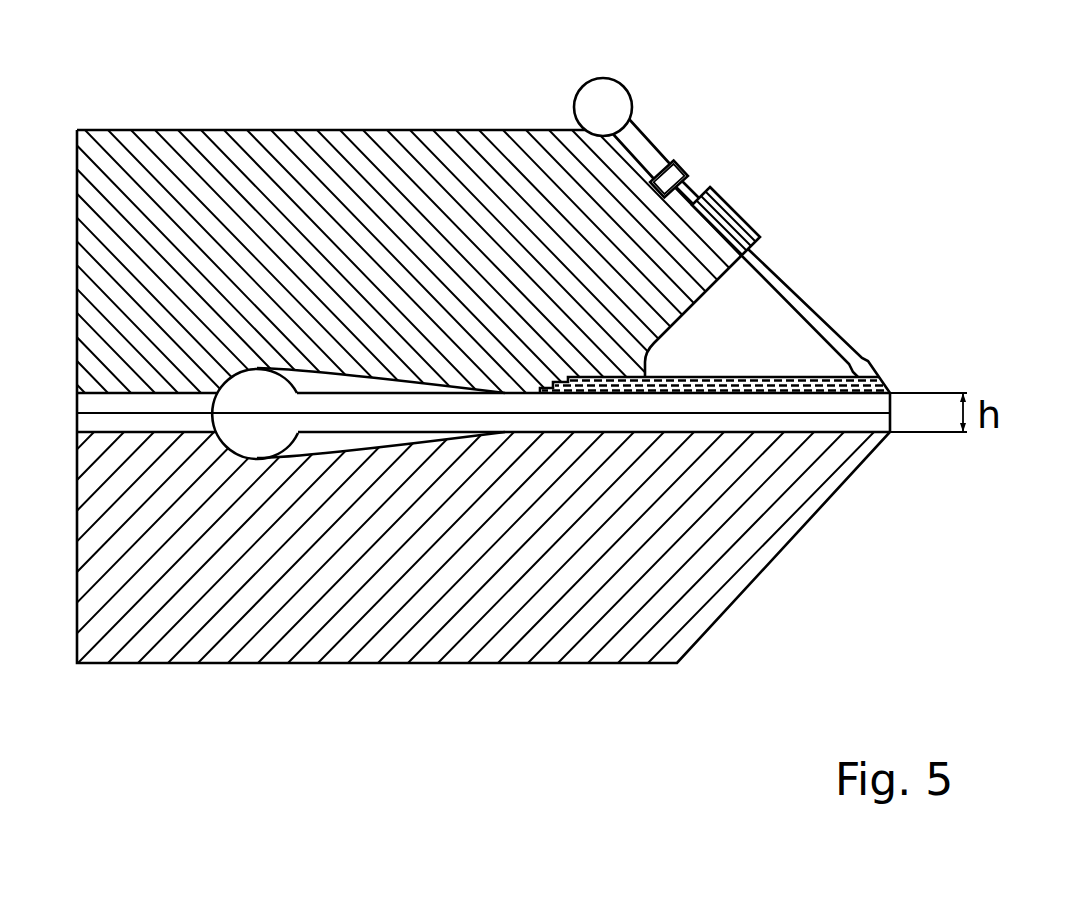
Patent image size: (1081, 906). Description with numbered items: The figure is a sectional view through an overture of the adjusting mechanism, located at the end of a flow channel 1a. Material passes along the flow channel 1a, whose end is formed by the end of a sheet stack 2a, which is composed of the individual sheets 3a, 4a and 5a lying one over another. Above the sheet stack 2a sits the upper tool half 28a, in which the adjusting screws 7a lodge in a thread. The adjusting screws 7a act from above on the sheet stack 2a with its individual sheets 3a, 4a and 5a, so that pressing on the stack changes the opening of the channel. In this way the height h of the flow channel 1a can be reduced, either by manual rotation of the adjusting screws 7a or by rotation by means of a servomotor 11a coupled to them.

The flow channel 1a is at (506, 349).
The upper tool half 28a is at (435, 180).
The servomotor 11a is at (607, 105).
The adjusting screw 7a is at (688, 192).
The sheet stack 2a is at (752, 375).
The individual sheet 3a is at (784, 375).
The individual sheet 4a is at (819, 375).
The individual sheet 5a is at (846, 374).